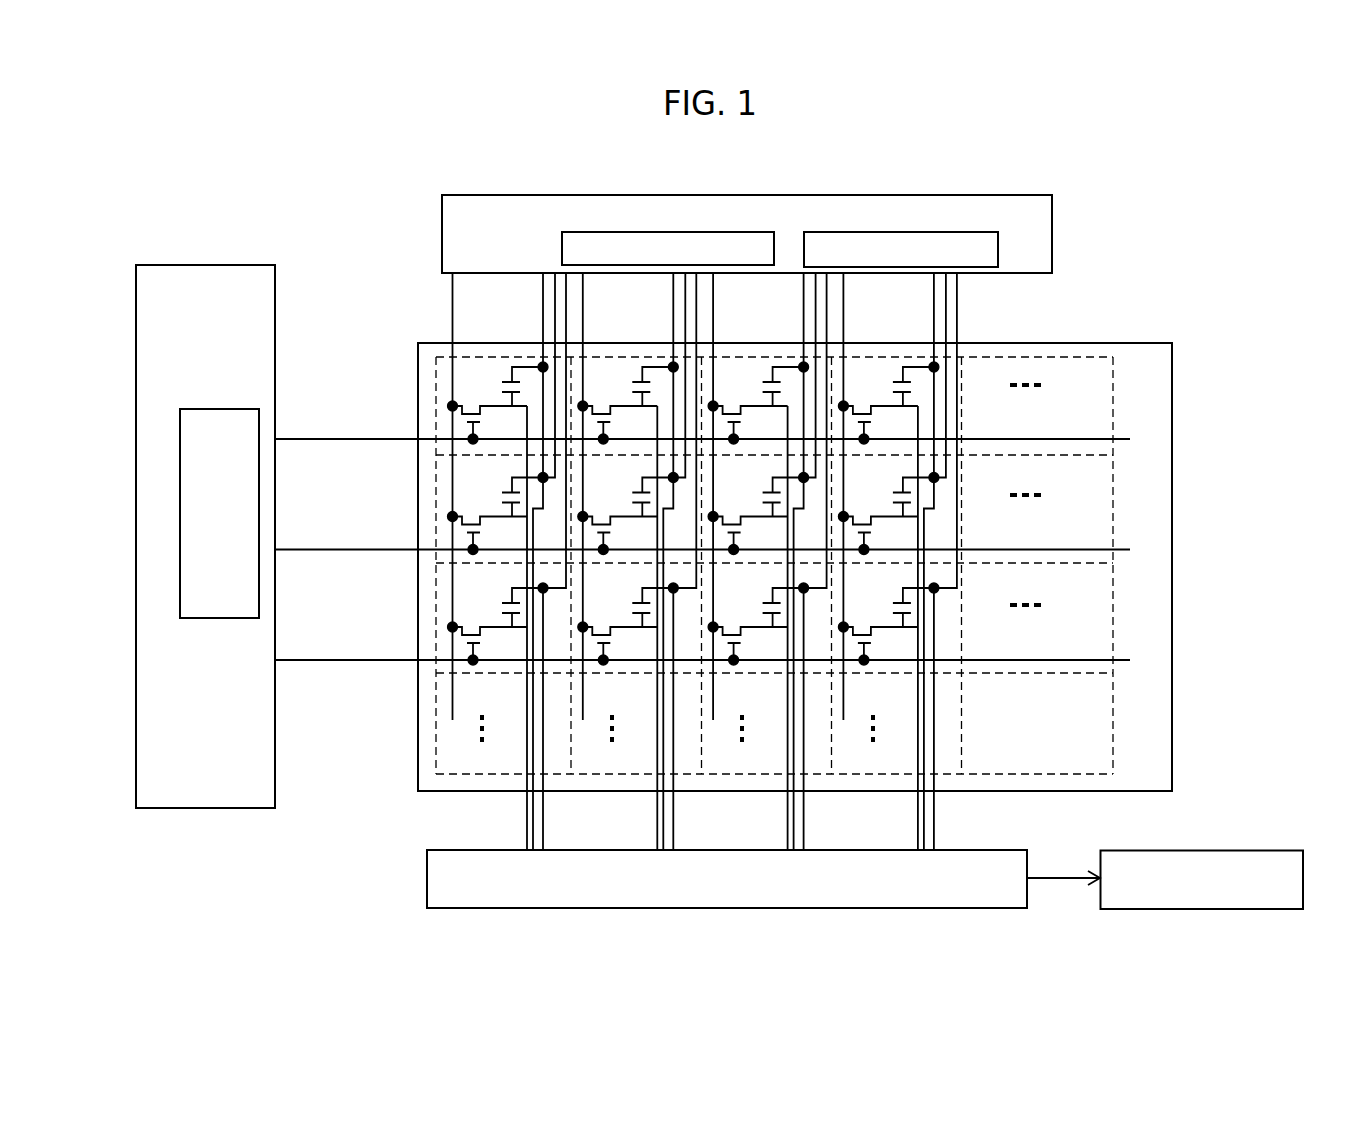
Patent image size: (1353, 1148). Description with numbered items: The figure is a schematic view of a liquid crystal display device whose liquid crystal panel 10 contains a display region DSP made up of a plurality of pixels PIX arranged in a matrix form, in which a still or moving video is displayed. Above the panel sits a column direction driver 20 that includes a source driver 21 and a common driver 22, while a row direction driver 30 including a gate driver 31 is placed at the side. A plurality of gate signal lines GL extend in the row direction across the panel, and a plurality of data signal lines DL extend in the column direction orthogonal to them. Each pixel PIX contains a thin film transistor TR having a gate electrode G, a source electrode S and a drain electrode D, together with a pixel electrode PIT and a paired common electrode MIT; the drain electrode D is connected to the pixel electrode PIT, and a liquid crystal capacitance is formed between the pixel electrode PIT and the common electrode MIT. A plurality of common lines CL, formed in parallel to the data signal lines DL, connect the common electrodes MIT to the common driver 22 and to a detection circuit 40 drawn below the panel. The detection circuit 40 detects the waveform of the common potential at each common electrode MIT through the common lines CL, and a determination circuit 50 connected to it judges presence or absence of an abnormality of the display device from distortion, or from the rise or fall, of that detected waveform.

The liquid crystal panel 10 is at (1137, 344).
The column direction driver 20 is at (505, 194).
The source driver 21 is at (690, 232).
The common driver 22 is at (913, 232).
The row direction driver 30 is at (136, 713).
The gate driver 31 is at (180, 560).
The detection circuit 40 is at (973, 849).
The determination circuit 50 is at (1228, 850).
The display region DSP is at (1113, 418).
The pixel PIX is at (628, 470).
The gate signal line GL is at (296, 637).
The data signal line DL is at (868, 289).
The common line CL is at (947, 313).
The transistor TR is at (422, 388).
The common electrode MIT is at (500, 382).
The pixel electrode PIT is at (500, 393).
The drain electrode D is at (483, 405).
The source electrode S is at (462, 407).
The gate electrode G is at (470, 428).